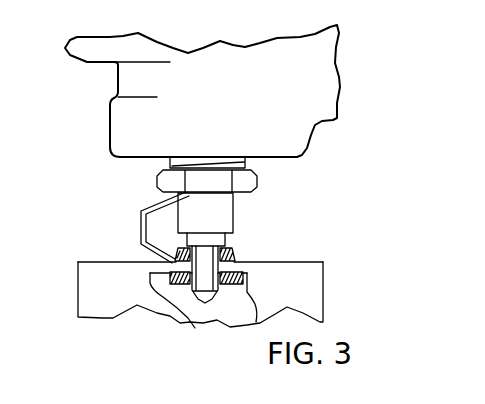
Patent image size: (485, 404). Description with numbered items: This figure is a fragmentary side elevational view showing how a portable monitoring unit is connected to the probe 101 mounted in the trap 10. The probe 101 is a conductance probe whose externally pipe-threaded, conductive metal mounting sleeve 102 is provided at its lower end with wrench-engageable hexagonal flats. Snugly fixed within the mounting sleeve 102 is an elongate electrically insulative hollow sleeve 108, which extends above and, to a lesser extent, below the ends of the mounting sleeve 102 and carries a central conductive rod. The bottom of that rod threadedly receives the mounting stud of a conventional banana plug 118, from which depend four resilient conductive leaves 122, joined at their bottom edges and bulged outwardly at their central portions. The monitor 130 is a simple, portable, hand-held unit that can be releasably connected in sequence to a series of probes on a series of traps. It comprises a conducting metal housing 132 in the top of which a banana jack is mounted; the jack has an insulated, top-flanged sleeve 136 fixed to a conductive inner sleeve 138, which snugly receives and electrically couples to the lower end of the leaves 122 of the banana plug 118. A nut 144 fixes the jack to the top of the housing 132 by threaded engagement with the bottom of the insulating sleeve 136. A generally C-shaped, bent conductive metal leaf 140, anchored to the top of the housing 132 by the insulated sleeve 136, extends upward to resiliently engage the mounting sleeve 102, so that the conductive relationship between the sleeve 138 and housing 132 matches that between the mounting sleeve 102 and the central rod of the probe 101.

The steam trap 10 is at (345, 55).
The probe 101 is at (280, 170).
The mounting sleeve 102 is at (266, 180).
The hollow sleeve 108 is at (228, 212).
The banana plug 118 is at (226, 244).
The resilient conductive leaves 122 is at (198, 295).
The conductive sleeve 138 is at (208, 294).
The insulated top flanged sleeve 136 is at (238, 256).
The nut 144 is at (244, 279).
The housing 132 is at (320, 272).
The monitor 130 is at (329, 294).
The bent conductive metal leaf 140 is at (141, 222).